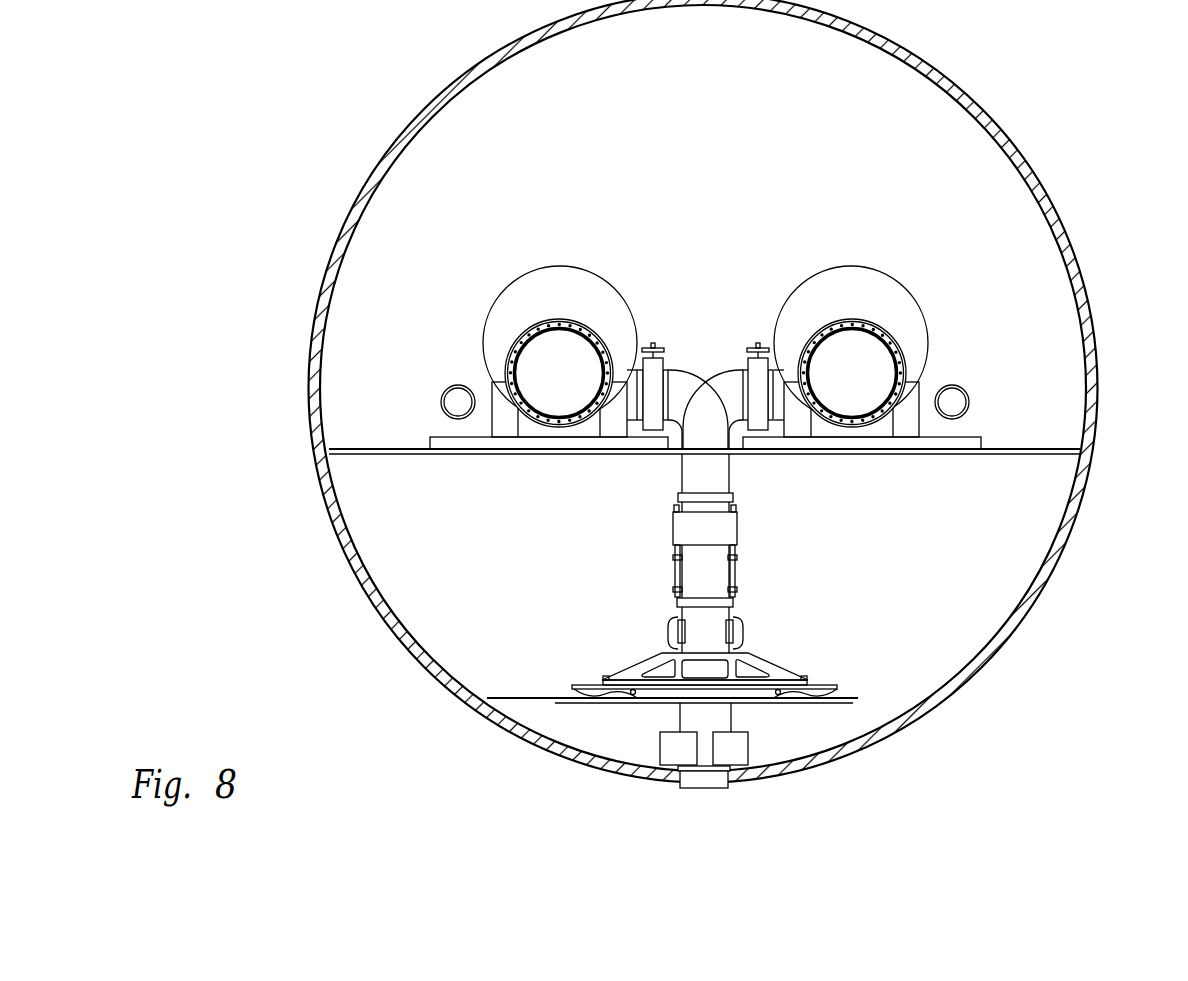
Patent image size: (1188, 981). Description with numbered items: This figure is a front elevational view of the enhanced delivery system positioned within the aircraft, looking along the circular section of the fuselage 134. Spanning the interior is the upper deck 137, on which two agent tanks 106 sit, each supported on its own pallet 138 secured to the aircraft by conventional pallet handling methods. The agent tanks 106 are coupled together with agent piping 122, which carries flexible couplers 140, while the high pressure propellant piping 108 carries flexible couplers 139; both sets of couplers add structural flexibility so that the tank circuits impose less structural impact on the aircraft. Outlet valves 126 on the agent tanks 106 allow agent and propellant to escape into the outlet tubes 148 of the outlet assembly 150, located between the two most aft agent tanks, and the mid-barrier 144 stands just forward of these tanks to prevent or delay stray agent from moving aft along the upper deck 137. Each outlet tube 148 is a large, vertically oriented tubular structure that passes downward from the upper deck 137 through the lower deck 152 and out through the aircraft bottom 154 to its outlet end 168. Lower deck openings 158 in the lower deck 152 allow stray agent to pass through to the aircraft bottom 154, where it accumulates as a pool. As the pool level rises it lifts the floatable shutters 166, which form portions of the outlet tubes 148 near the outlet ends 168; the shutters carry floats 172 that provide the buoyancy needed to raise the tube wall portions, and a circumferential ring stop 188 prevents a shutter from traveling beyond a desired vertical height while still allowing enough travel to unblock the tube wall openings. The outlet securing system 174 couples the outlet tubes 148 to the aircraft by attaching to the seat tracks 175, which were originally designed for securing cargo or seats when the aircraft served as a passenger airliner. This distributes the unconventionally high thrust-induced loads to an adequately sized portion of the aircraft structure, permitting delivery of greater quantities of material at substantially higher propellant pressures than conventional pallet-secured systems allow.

The fuselage 134 is at (970, 93).
The mid-barrier 144 is at (1008, 232).
The agent tanks 106 is at (513, 270).
The flexible couplers 140 is at (542, 322).
The agent piping 122 is at (515, 342).
The flexible couplers 139 is at (457, 388).
The high pressure propellant piping 108 is at (455, 403).
The outlet valves 126 is at (653, 343).
The upper deck 137 is at (1053, 446).
The pallets 138 is at (557, 443).
The outlet tubes 148 is at (717, 478).
The lower deck openings 158 is at (1018, 524).
The outlet assembly 150 is at (880, 582).
The outlet securing system 174 is at (782, 638).
The circumferential ring stop 188 is at (675, 602).
The seat tracks 175 is at (852, 697).
The floatable shutters 166 is at (705, 732).
The floats 172 is at (668, 748).
The lower deck 152 is at (866, 722).
The outlet ends 168 is at (697, 790).
The aircraft bottom 154 is at (745, 787).